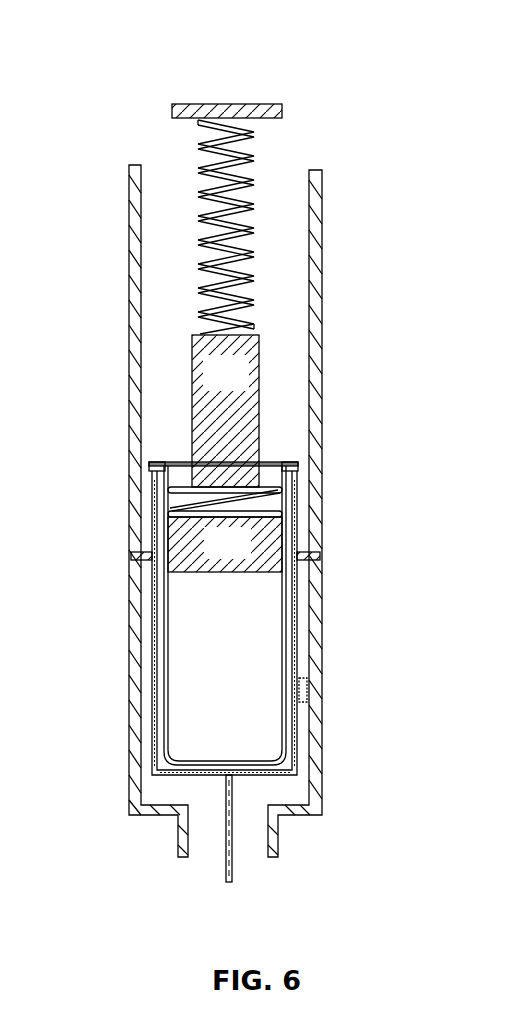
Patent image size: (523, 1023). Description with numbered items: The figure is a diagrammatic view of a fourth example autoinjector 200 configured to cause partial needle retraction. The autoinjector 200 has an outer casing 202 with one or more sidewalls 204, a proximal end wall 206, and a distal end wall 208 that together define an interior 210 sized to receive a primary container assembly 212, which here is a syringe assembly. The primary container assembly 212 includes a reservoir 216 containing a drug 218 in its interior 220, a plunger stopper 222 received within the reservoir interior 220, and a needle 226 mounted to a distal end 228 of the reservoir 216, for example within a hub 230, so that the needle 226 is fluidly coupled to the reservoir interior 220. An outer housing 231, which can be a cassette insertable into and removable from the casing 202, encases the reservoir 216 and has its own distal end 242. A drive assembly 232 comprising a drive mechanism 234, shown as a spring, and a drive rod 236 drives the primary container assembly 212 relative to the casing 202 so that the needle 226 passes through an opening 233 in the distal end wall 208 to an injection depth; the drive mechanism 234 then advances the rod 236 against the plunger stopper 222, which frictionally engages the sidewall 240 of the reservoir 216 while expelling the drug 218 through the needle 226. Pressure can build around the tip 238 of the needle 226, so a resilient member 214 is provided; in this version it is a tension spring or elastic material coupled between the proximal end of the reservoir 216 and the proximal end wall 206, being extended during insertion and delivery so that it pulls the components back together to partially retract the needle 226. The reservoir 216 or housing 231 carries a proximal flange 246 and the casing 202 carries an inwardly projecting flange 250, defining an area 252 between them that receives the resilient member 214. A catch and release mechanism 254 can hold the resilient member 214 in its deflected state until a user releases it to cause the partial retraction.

The autoinjector 200 is at (383, 54).
The outer casing 202 is at (129, 290).
The sidewall 204 is at (320, 405).
The proximal end wall 206 is at (227, 104).
The distal end wall 208 is at (280, 818).
The interior 210 is at (170, 396).
The primary container assembly 212 is at (306, 597).
The resilient member 214 is at (300, 488).
The reservoir 216 is at (295, 640).
The drug 218 is at (249, 714).
The interior 220 is at (187, 681).
The plunger stopper 222 is at (284, 557).
The needle 226 is at (233, 850).
The distal end 228 is at (284, 736).
The hub 230 is at (226, 775).
The outer housing 231 is at (154, 703).
The drive assembly 232 is at (276, 234).
The opening 233 is at (188, 848).
The drive mechanism 234 is at (253, 168).
The drive rod 236 is at (260, 370).
The tip 238 is at (230, 882).
The sidewall 240 is at (163, 667).
The distal end 242 is at (292, 777).
The proximal flange 246 is at (158, 462).
The inwardly projecting flange 250 is at (148, 562).
The area 252 is at (147, 524).
The catch and release mechanism 254 is at (305, 678).